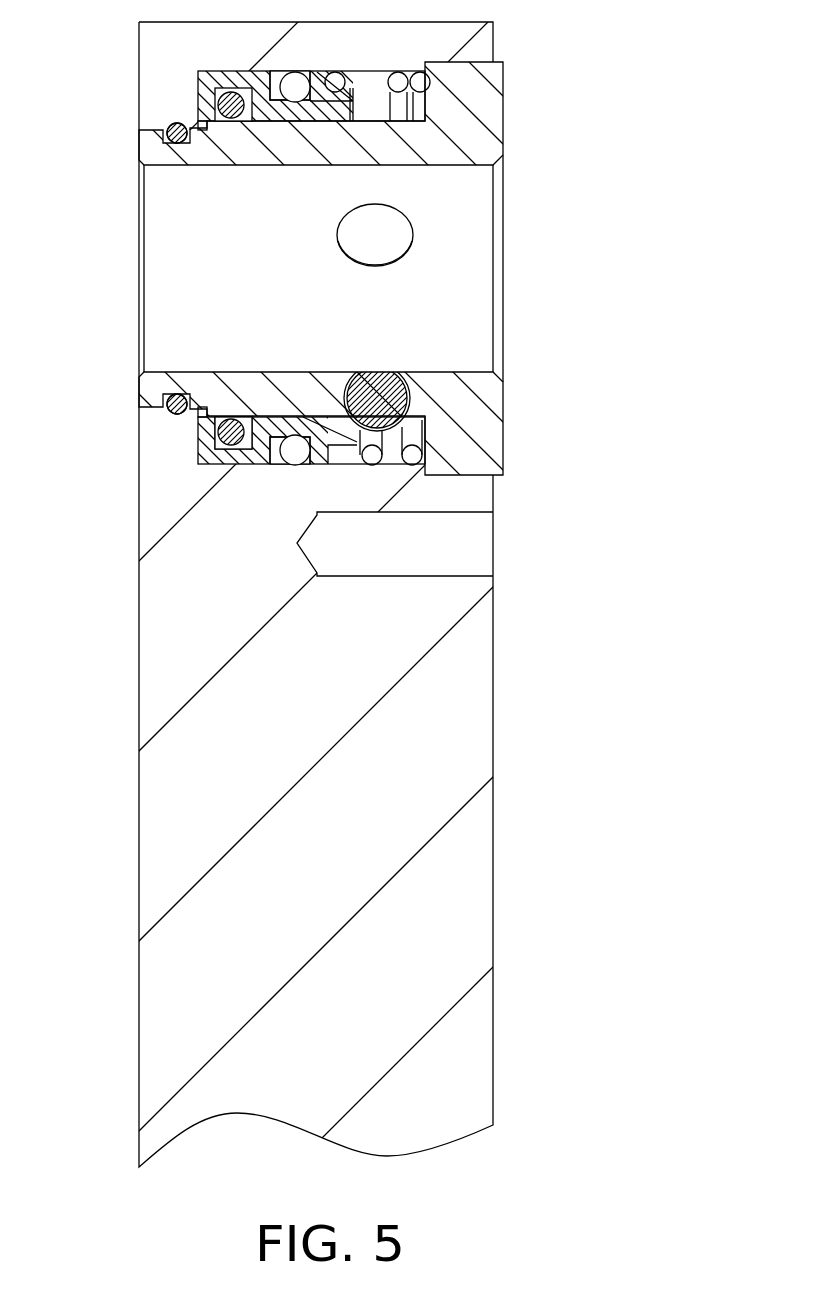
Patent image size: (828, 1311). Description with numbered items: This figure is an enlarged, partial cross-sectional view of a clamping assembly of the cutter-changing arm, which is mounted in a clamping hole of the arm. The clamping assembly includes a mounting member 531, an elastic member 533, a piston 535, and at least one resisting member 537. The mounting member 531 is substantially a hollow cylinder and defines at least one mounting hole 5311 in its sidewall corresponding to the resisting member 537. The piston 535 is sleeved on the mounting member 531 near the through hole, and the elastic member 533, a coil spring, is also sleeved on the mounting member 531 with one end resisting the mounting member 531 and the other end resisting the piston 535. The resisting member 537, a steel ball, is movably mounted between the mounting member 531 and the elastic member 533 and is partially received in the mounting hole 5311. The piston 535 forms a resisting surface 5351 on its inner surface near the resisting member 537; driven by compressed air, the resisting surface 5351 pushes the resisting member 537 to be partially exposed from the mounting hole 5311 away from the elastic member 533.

The mounting member 531 is at (457, 320).
The mounting hole 5311 is at (385, 235).
The elastic member 533 is at (398, 81).
The piston 535 is at (222, 76).
The resisting member 537 is at (377, 404).
The resisting surface 5351 is at (353, 432).